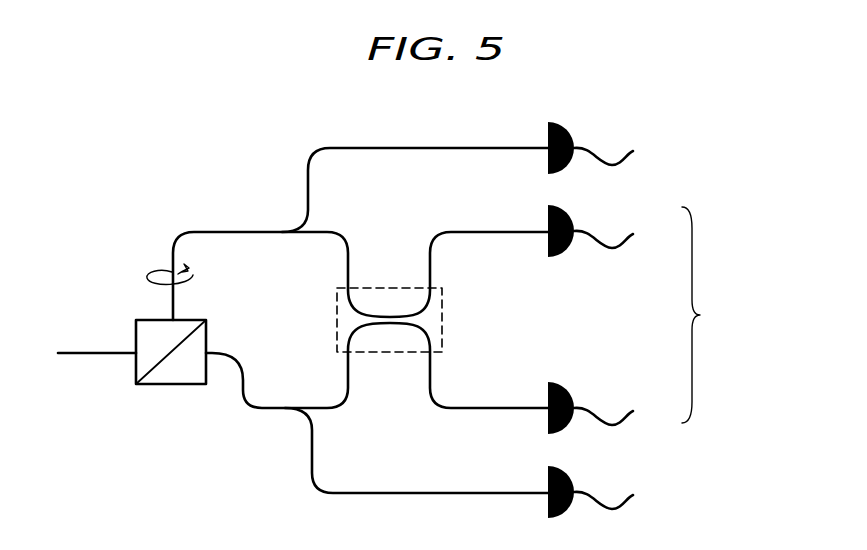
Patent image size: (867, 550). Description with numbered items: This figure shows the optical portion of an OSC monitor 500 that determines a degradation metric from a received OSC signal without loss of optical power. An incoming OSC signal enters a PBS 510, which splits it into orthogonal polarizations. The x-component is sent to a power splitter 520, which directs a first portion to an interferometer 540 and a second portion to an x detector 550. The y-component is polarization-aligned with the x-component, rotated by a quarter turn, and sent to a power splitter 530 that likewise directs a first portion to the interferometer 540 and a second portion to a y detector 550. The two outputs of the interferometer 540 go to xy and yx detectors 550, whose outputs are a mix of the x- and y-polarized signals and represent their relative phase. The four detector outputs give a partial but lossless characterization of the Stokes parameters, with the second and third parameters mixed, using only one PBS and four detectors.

The OSC monitor 500 is at (150, 150).
The PBS 510 is at (166, 386).
The power splitter 520 is at (284, 409).
The power splitter 530 is at (282, 232).
The interferometer 540 is at (442, 309).
The detector 550 is at (549, 478).